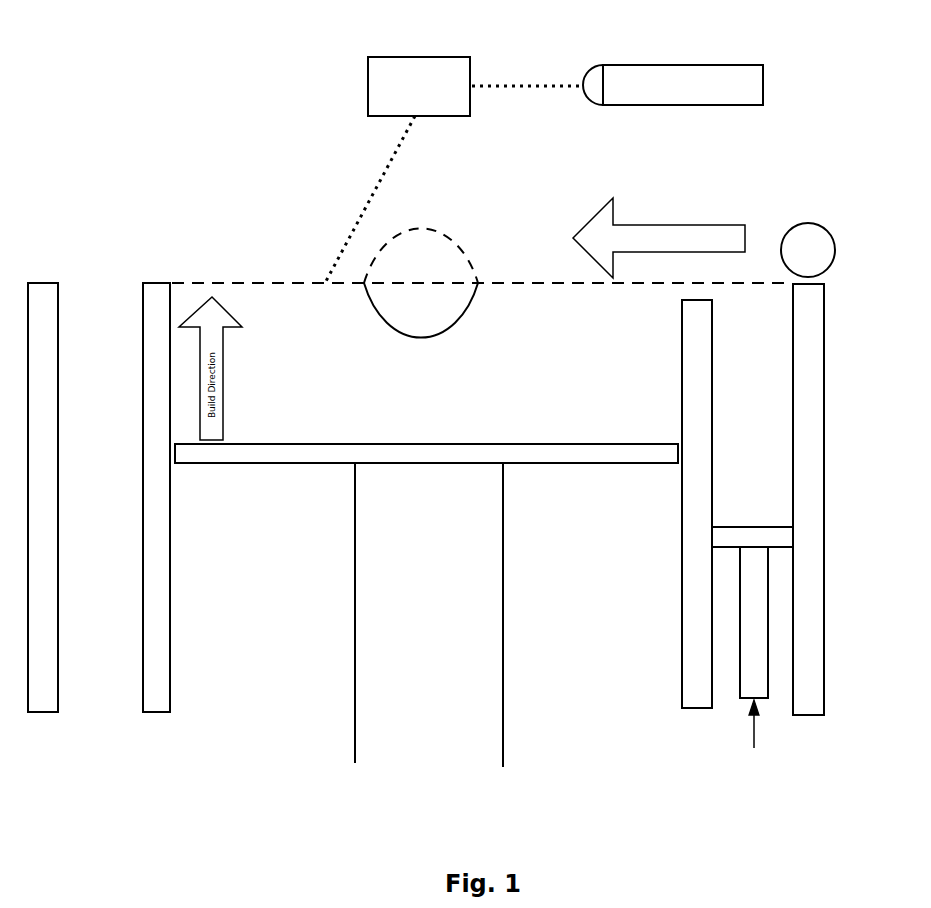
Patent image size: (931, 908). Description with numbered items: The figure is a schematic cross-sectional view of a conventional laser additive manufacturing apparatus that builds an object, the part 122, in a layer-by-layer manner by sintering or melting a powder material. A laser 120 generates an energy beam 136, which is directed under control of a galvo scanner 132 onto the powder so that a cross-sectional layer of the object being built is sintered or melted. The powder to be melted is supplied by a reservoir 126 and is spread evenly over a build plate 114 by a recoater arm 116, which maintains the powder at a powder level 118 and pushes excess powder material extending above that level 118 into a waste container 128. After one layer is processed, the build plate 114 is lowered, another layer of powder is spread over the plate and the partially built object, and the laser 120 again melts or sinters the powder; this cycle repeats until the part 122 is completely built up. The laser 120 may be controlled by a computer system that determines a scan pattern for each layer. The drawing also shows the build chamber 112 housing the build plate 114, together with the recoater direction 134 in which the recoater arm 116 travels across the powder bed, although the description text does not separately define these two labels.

The build chamber 112 is at (566, 345).
The build plate 114 is at (628, 443).
The recoater roller 116 is at (806, 224).
The powder bed surface 118 is at (235, 283).
The laser 120 is at (628, 63).
The part being built 122 is at (360, 347).
The powder supply 126 is at (760, 382).
The outer wall 128 is at (123, 608).
The galvo scanner 132 is at (420, 57).
The recoater 134 is at (592, 225).
The laser beam 136 is at (372, 201).